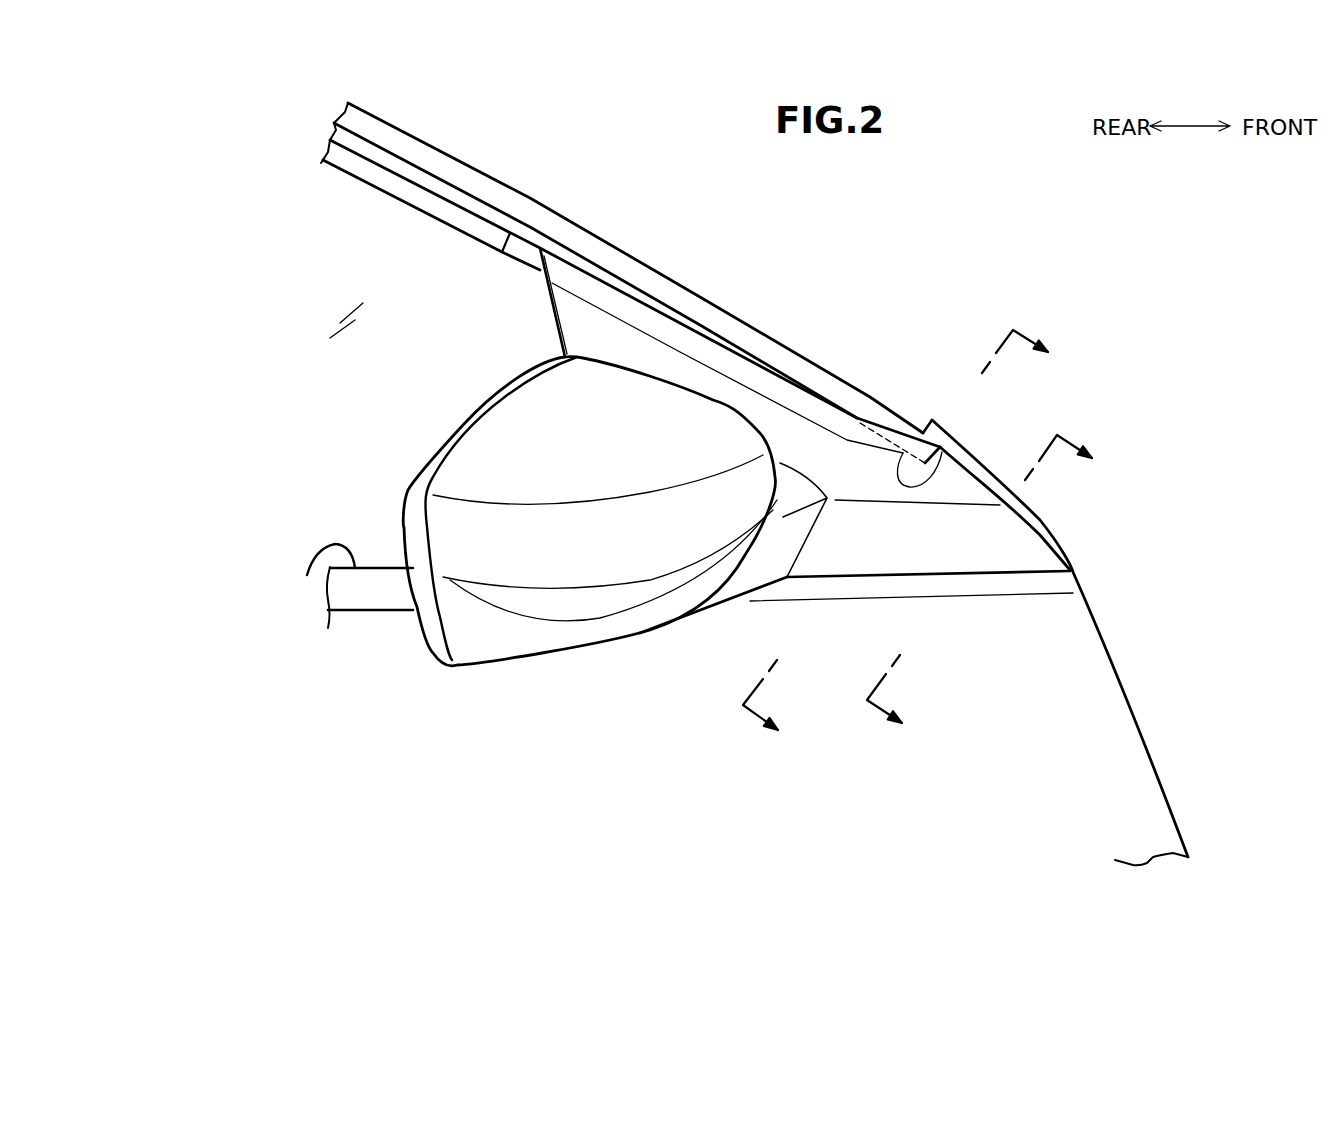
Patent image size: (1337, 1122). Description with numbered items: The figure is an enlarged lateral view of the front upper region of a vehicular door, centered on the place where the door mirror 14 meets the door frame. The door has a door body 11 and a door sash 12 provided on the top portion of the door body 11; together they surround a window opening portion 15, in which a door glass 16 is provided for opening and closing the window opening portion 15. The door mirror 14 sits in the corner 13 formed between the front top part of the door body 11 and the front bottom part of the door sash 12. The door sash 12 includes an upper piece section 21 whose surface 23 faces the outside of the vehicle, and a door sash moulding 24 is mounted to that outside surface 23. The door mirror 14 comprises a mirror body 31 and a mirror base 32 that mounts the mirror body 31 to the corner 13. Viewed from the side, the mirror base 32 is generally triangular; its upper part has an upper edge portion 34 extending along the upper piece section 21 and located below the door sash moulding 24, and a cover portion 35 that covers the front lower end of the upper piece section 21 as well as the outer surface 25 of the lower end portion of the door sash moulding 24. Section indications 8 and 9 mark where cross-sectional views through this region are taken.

The section line VIII-VIII 8 is at (879, 514).
The section line IX-IX 9 is at (965, 565).
The door body 11 is at (1160, 752).
The door sash 12 is at (390, 121).
The corner 13 is at (303, 492).
The door mirror 14 is at (418, 453).
The window opening portion 15 is at (307, 575).
The door glass 16 is at (330, 310).
The upper piece section 21 is at (475, 163).
The surface 23 is at (333, 128).
The door sash moulding 24 is at (557, 225).
The outer surface 25 is at (927, 462).
The mirror body 31 is at (470, 412).
The mirror base 32 is at (968, 560).
The upper edge portion 34 is at (667, 313).
The cover portion 35 is at (1015, 498).